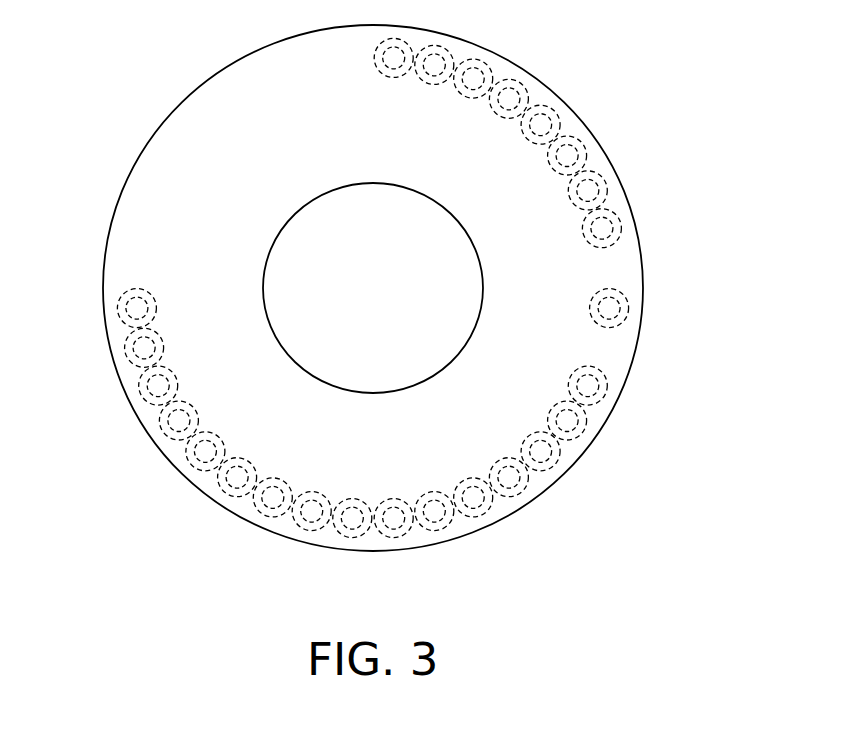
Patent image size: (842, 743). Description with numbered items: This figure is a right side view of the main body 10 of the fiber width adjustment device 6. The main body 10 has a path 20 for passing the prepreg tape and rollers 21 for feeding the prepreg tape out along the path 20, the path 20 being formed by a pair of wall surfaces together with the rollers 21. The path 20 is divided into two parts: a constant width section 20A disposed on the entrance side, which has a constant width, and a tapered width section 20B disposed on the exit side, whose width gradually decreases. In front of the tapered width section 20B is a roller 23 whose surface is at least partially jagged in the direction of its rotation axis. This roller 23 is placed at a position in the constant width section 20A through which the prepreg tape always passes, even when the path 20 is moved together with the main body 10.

The fiber width adjustment device 6 is at (79, 144).
The main body 10 is at (111, 222).
The path 20 is at (500, 497).
The constant width section 20A is at (610, 518).
The tapered width section 20B is at (533, 548).
The rollers 21 is at (608, 388).
The roller 23 is at (628, 308).